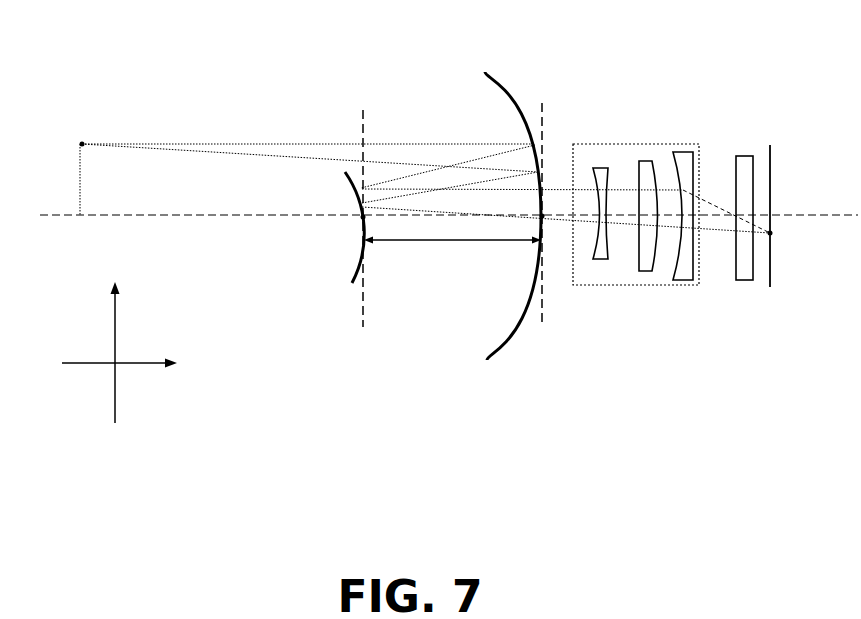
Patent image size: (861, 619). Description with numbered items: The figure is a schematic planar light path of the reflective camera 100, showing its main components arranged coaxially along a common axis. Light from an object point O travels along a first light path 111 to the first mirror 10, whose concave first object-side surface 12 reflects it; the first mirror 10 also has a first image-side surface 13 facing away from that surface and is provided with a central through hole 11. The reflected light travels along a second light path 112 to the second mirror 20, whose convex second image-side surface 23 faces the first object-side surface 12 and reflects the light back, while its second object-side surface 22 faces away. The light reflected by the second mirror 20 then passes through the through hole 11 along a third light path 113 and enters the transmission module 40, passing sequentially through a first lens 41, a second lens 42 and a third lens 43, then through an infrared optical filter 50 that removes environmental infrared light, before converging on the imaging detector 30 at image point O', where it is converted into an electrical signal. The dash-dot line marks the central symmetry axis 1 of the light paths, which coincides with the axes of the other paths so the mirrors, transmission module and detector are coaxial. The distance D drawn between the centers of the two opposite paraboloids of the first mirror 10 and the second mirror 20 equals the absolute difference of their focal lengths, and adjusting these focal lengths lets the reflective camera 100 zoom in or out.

The reflective camera 100 is at (31, 35).
The central symmetry axis of the first light path 1 is at (449, 239).
The first mirror 10 is at (502, 231).
The through hole 11 is at (523, 288).
The first object-side surface 12 is at (523, 288).
The first image-side surface 13 is at (526, 313).
The second mirror 20 is at (337, 218).
The second object-side surface 22 is at (333, 238).
The second image-side surface 23 is at (354, 265).
The imaging detector 30 is at (771, 146).
The transmission module 40 is at (638, 172).
The first lens 41 is at (600, 177).
The second lens 42 is at (646, 172).
The third lens 43 is at (682, 167).
The infrared optical filter 50 is at (743, 157).
The first light path 111 is at (253, 143).
The second light path 112 is at (397, 177).
The third light path 113 is at (412, 187).